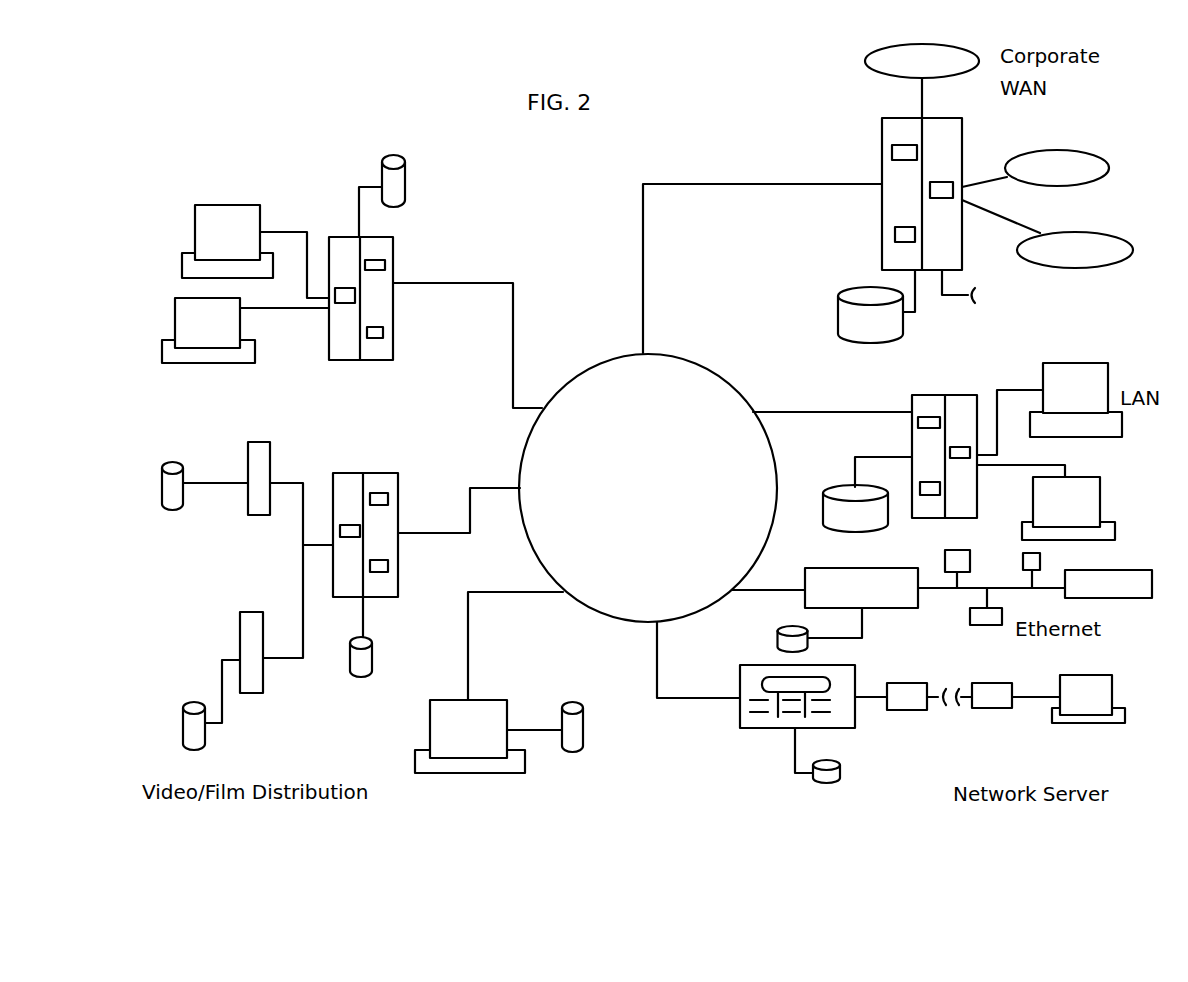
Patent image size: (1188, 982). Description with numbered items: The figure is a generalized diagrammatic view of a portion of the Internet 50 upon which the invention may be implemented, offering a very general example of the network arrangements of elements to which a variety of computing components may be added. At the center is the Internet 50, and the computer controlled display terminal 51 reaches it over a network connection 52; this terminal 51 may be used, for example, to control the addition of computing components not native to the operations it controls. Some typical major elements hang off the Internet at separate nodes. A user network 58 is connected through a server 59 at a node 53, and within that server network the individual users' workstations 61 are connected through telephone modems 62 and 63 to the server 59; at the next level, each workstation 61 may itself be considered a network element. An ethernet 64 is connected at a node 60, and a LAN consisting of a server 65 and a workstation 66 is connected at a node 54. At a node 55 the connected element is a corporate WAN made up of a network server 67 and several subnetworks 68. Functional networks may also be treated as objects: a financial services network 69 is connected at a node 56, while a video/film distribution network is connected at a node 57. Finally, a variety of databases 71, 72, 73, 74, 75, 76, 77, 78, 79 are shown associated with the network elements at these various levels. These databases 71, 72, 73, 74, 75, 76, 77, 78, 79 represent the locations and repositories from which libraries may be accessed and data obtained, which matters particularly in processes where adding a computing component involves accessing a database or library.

The Internet 50 is at (600, 393).
The computer controlled display terminal 51 is at (480, 773).
The network connection 52 is at (470, 668).
The node 53 is at (653, 622).
The node 54 is at (740, 412).
The node 55 is at (644, 353).
The node 56 is at (542, 408).
The node 57 is at (520, 487).
The user network 58 is at (903, 708).
The server 59 is at (740, 728).
The node 60 is at (732, 590).
The user workstation 61 is at (1090, 675).
The telephone modem 62 is at (987, 710).
The telephone modem 63 is at (907, 697).
The ethernet 64 is at (845, 587).
The server 65 is at (923, 405).
The workstation 66 is at (1085, 363).
The network server 67 is at (897, 132).
The subnetworks 68 is at (902, 63).
The financial services network 69 is at (310, 210).
The database 71 is at (585, 725).
The database 72 is at (777, 637).
The database 73 is at (840, 515).
The database 74 is at (878, 340).
The database 75 is at (827, 775).
The database 76 is at (405, 175).
The database 77 is at (360, 673).
The database 78 is at (184, 745).
The database 79 is at (172, 498).